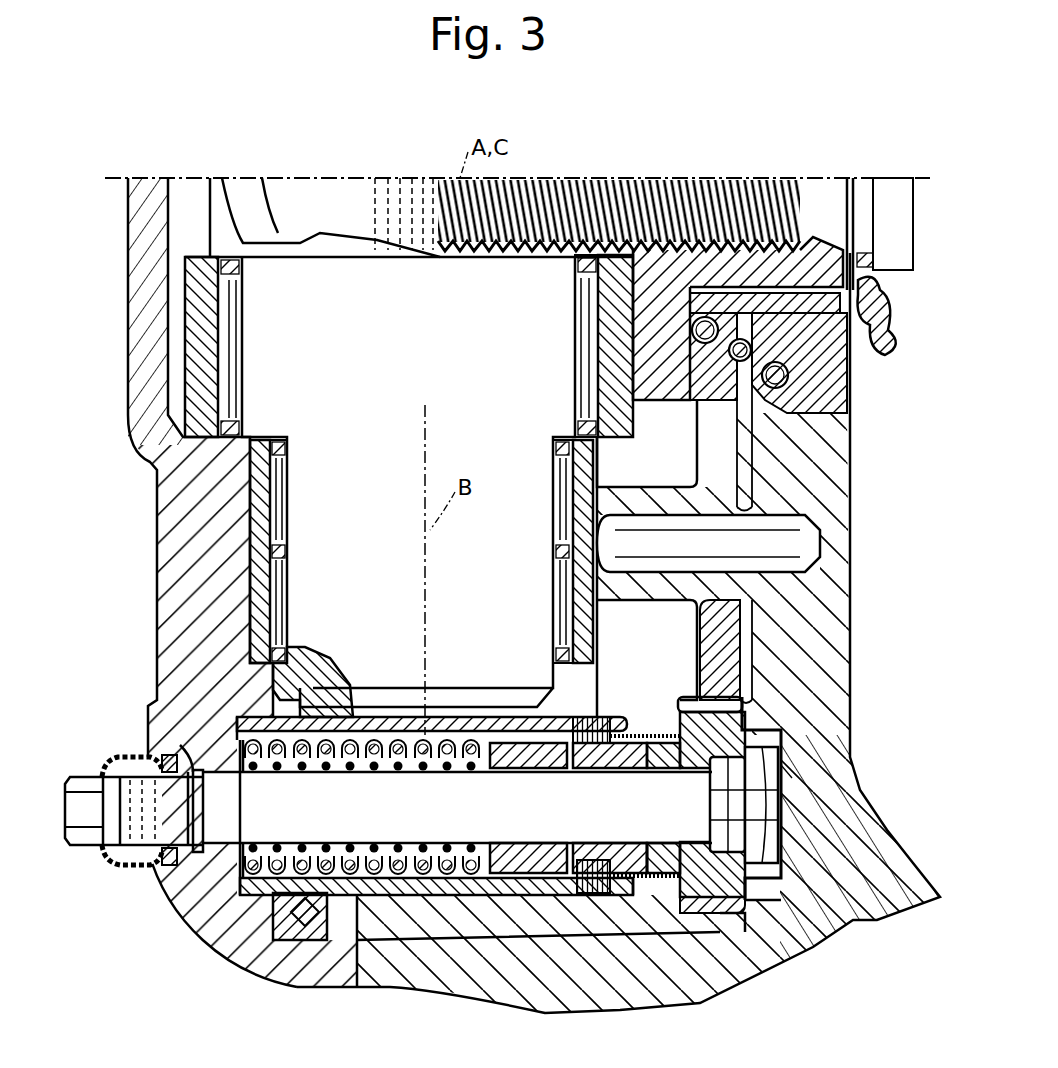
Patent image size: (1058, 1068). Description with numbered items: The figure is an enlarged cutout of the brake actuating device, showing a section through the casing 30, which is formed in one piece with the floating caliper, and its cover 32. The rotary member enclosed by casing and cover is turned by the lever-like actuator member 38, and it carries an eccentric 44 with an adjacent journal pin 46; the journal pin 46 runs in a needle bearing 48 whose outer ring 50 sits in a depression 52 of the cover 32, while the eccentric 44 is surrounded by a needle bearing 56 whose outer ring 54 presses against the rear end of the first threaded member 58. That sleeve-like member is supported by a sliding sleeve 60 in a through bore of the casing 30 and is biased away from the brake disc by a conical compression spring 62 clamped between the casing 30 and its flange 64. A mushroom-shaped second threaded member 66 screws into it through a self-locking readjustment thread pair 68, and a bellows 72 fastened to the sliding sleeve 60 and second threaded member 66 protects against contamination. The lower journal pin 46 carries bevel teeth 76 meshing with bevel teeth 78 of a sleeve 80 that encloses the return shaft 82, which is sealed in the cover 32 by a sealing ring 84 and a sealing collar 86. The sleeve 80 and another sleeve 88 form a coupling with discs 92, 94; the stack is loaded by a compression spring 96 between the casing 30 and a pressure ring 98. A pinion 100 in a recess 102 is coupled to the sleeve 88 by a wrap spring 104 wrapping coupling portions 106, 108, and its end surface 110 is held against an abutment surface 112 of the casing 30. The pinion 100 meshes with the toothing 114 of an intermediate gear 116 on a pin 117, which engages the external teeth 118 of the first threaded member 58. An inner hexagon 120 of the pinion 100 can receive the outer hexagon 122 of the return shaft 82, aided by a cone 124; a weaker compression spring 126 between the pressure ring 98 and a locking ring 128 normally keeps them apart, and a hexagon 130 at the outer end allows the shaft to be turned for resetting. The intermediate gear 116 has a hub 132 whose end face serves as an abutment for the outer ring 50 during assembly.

The casing 30 is at (840, 915).
The cover 32 is at (135, 210).
The actuator member 38 is at (308, 195).
The eccentric 44 is at (409, 496).
The journal pin 46 is at (295, 612).
The needle bearing 48 is at (265, 500).
The outer ring 50 is at (245, 530).
The depression 52 is at (245, 575).
The outer ring 54 is at (195, 377).
The needle bearing 56 is at (230, 305).
The first threaded member 58 is at (780, 270).
The sliding sleeve 60 is at (850, 383).
The compression spring 62 is at (848, 415).
The flange 64 is at (668, 320).
The second threaded member 66 is at (555, 200).
The readjustment thread pair 68 is at (720, 240).
The bellows 72 is at (892, 345).
The bevel teeth 76 is at (300, 680).
The bevel teeth 78 is at (310, 945).
The sleeve 80 is at (285, 930).
The return shaft 82 is at (175, 855).
The sealing ring 84 is at (160, 722).
The sealing collar 86 is at (122, 762).
The sleeve 88 is at (607, 770).
The discs 92 is at (590, 893).
The discs 94 is at (600, 895).
The compression spring 96 is at (440, 870).
The pressure ring 98 is at (510, 860).
The pinion 100 is at (720, 905).
The recess 102 is at (782, 752).
The wrap spring 104 is at (650, 733).
The coupling portion 106 is at (660, 860).
The coupling portion 108 is at (627, 857).
The end surface 110 is at (745, 722).
The abutment surface 112 is at (790, 873).
The toothing 114 is at (735, 905).
The intermediate gear 116 is at (720, 622).
The pin 117 is at (795, 535).
The external teeth 118 is at (682, 390).
The inner hexagon 120 is at (783, 835).
The outer hexagon 122 is at (790, 808).
The cone 124 is at (827, 772).
The compression spring 126 is at (395, 870).
The locking ring 128 is at (195, 925).
The hexagon 130 is at (78, 840).
The hub 132 is at (650, 588).